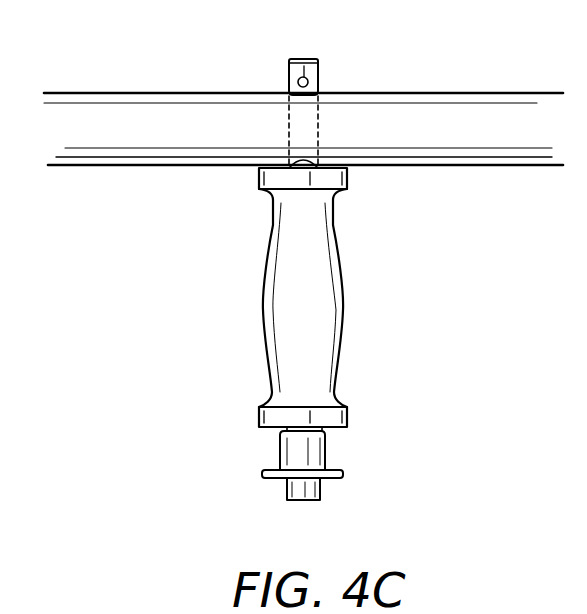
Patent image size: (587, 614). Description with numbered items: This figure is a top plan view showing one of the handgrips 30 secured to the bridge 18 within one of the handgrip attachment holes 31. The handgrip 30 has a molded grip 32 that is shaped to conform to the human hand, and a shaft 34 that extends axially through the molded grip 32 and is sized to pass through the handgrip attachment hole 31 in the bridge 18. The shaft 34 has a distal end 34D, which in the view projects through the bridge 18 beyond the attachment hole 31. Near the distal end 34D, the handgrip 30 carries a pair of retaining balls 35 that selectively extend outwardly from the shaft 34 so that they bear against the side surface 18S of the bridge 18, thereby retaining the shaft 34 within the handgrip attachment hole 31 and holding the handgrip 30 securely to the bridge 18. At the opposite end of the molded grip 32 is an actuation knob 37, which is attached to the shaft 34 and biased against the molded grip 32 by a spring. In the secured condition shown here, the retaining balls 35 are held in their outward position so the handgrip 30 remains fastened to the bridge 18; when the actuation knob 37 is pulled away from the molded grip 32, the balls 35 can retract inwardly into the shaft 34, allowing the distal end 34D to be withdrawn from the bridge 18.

The bridge 18 is at (145, 166).
The side surface of the bridge 18S is at (503, 92).
The handgrip 30 is at (293, 297).
The handgrip attachment hole 31 is at (319, 128).
The molded grip 32 is at (337, 340).
The shaft 34 is at (296, 64).
The distal end of the shaft 34D is at (318, 63).
The retaining balls 35 is at (308, 82).
The actuation knob 37 is at (325, 452).